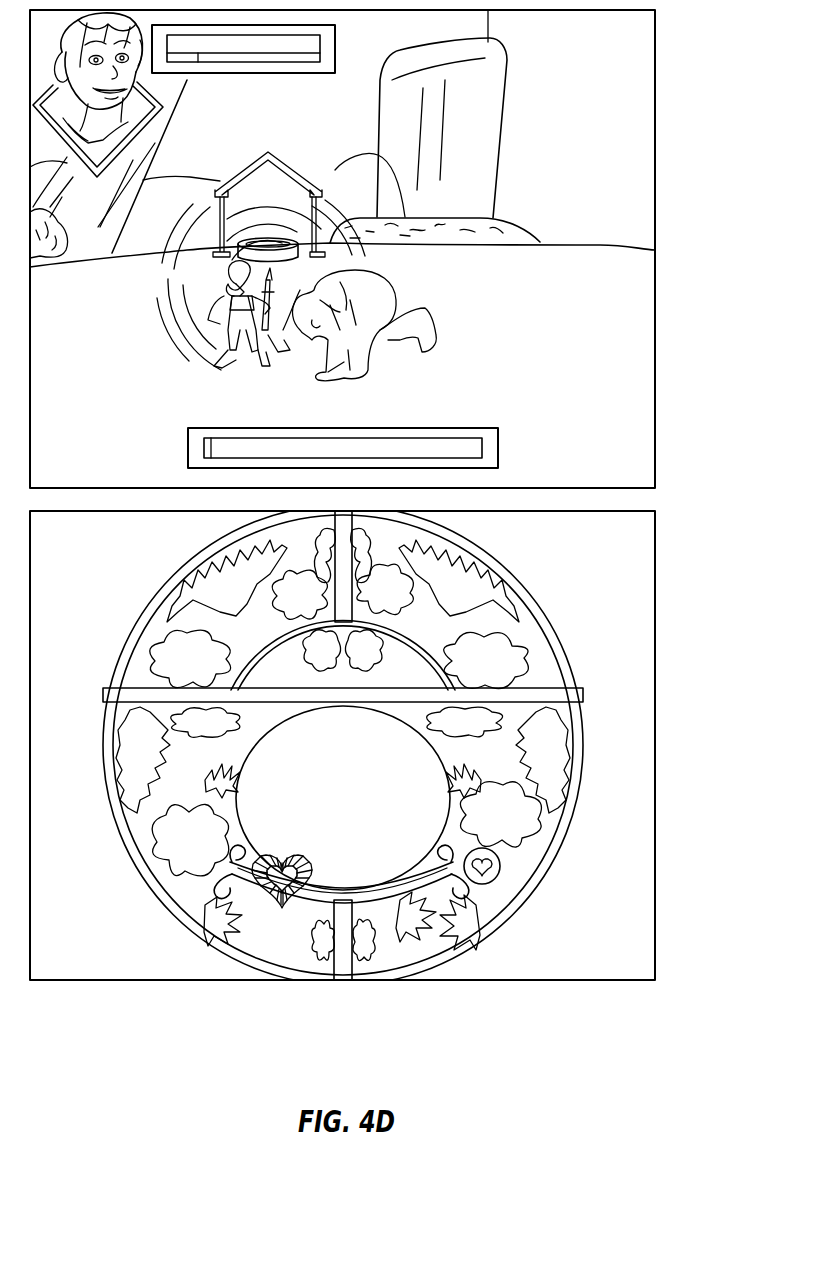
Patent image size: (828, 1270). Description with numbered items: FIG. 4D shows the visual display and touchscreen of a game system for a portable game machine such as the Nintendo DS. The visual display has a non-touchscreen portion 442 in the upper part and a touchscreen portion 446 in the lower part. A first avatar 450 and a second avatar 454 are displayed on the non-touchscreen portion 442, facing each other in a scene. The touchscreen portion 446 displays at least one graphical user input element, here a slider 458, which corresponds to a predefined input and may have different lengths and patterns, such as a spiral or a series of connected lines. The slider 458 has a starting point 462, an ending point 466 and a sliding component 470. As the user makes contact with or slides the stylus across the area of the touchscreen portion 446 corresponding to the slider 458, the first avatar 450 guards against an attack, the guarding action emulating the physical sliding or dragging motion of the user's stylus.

The non-touchscreen portion 442 is at (655, 196).
The touchscreen portion 446 is at (655, 612).
The first avatar 450 is at (222, 308).
The second avatar 454 is at (385, 305).
The slider 458 is at (375, 893).
The starting point 462 is at (213, 893).
The ending point 466 is at (497, 877).
The sliding component 470 is at (283, 843).